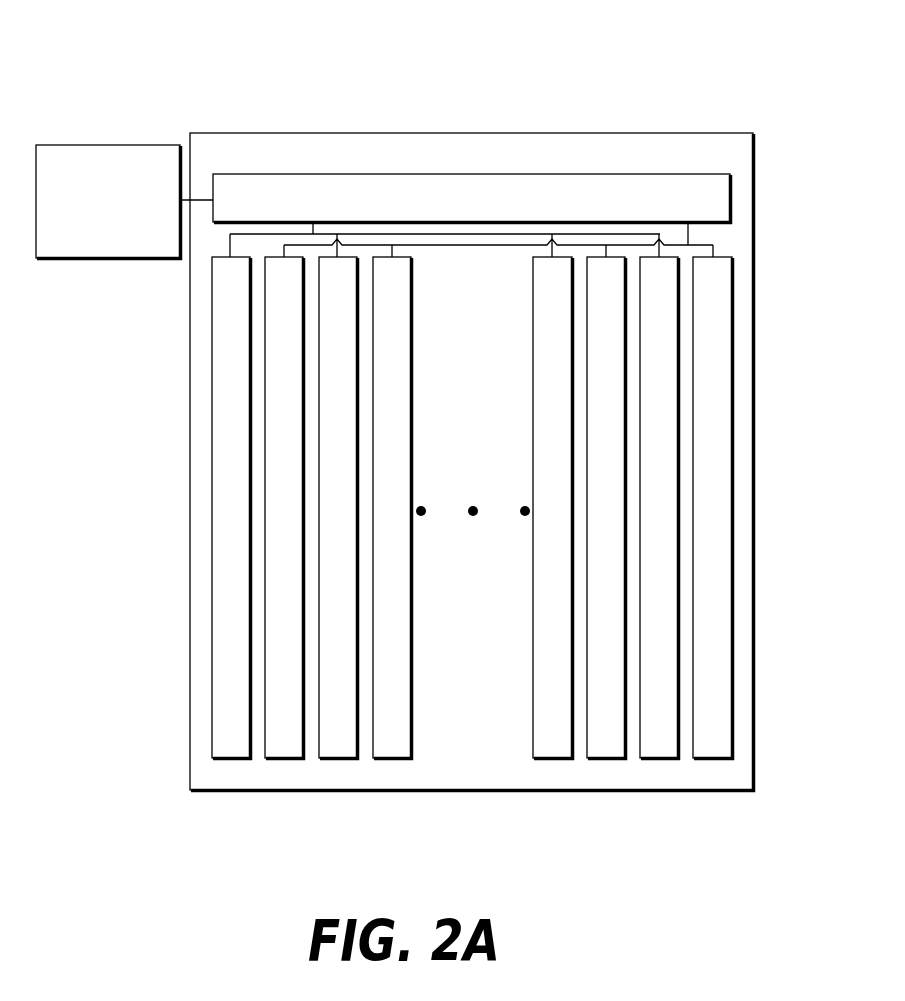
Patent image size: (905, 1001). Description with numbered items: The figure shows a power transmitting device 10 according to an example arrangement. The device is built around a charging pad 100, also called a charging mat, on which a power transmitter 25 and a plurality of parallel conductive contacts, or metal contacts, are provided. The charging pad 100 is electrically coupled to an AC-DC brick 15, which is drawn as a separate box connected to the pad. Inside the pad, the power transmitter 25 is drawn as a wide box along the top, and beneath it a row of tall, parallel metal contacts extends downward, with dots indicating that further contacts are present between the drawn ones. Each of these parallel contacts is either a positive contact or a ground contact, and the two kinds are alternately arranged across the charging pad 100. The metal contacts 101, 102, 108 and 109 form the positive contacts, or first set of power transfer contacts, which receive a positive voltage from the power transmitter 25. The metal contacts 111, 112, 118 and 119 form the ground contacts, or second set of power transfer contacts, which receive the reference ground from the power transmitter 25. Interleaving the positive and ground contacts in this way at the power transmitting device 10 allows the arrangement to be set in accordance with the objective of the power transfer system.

The power transmitting device 10 is at (180, 47).
The AC-DC brick 15 is at (115, 143).
The power transmitter 25 is at (300, 173).
The charging pad 100 is at (690, 132).
The metal contact 101 is at (230, 758).
The metal contact 102 is at (335, 758).
The metal contact 108 is at (550, 758).
The metal contact 109 is at (657, 758).
The metal contact 111 is at (282, 758).
The metal contact 112 is at (390, 758).
The metal contact 118 is at (603, 758).
The metal contact 119 is at (710, 758).